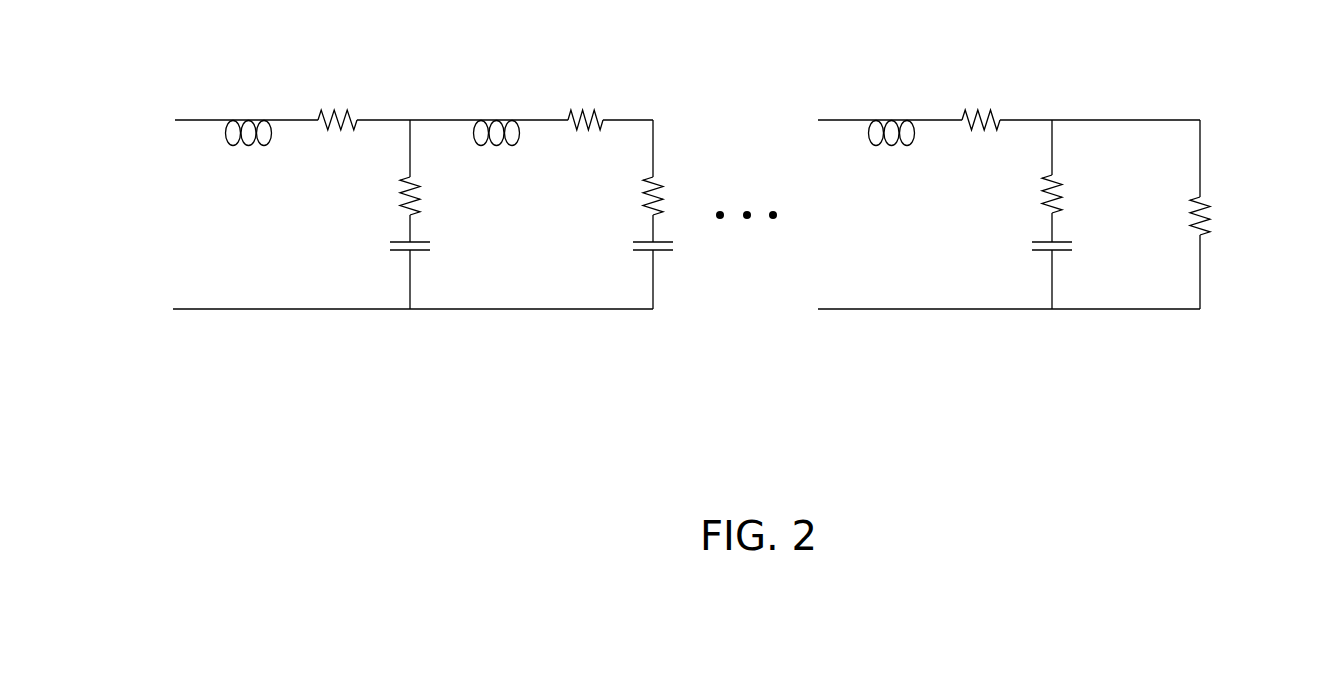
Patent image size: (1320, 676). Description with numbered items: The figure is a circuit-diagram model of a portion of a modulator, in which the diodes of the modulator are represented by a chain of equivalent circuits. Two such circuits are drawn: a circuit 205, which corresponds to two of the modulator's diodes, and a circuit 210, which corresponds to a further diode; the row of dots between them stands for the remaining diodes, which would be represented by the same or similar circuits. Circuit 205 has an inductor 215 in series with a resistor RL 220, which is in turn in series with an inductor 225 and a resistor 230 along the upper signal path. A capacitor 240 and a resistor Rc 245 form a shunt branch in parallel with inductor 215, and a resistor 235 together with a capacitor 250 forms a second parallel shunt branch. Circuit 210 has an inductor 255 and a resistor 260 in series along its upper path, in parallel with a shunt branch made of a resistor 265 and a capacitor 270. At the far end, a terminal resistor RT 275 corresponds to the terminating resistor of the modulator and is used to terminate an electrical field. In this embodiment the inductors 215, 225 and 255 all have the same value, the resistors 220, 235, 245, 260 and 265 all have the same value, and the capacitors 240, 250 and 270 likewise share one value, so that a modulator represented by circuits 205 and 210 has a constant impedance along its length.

The circuit 205 is at (322, 352).
The circuit 210 is at (965, 352).
The inductor 215 is at (231, 118).
The resistor RL 220 is at (336, 132).
The inductor 225 is at (483, 118).
The resistor 230 is at (585, 110).
The resistor 235 is at (644, 190).
The capacitor 240 is at (422, 252).
The resistor Rc 245 is at (422, 184).
The capacitor 250 is at (641, 252).
The inductor 255 is at (874, 118).
The resistor 260 is at (978, 110).
The resistor 265 is at (1063, 181).
The capacitor 270 is at (1064, 252).
The terminal resistor RT 275 is at (1189, 216).